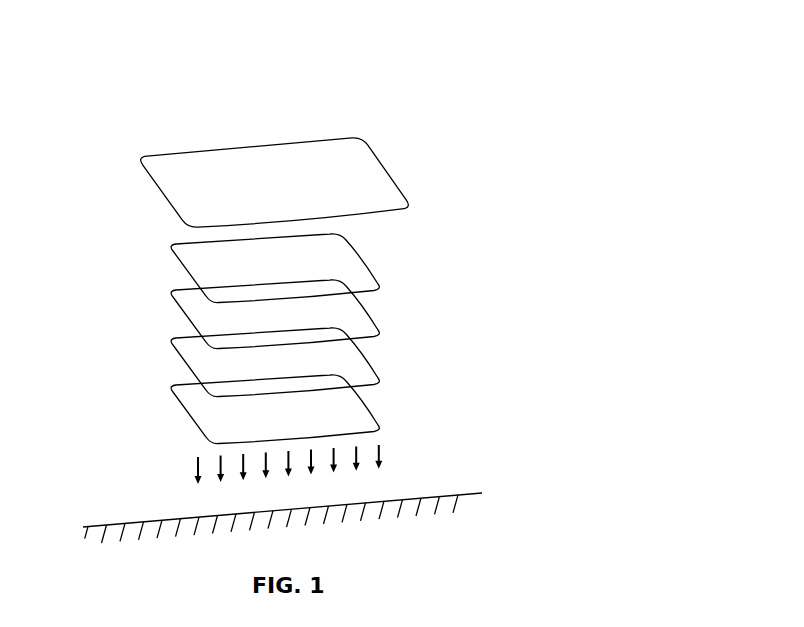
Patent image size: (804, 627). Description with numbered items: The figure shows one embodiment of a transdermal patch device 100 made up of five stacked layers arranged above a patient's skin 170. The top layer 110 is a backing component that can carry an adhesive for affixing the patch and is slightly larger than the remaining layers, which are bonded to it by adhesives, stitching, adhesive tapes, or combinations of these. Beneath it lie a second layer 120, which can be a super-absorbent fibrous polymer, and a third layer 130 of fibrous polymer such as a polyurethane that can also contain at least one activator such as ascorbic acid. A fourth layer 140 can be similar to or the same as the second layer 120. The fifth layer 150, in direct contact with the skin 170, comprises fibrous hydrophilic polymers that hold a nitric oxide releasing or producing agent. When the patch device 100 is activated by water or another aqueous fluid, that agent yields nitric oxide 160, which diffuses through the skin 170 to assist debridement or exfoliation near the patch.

The patch device 100 is at (445, 35).
The top layer 110 is at (175, 197).
The second layer 120 is at (185, 262).
The third layer 130 is at (185, 305).
The fourth layer 140 is at (188, 353).
The fifth layer 150 is at (188, 398).
The nitric oxide 160 is at (90, 510).
The skin 170 is at (83, 527).